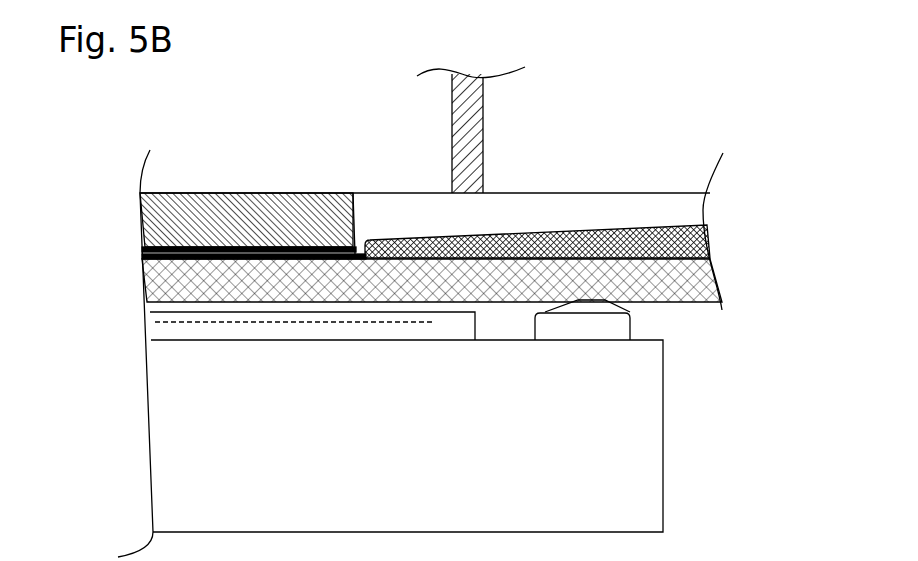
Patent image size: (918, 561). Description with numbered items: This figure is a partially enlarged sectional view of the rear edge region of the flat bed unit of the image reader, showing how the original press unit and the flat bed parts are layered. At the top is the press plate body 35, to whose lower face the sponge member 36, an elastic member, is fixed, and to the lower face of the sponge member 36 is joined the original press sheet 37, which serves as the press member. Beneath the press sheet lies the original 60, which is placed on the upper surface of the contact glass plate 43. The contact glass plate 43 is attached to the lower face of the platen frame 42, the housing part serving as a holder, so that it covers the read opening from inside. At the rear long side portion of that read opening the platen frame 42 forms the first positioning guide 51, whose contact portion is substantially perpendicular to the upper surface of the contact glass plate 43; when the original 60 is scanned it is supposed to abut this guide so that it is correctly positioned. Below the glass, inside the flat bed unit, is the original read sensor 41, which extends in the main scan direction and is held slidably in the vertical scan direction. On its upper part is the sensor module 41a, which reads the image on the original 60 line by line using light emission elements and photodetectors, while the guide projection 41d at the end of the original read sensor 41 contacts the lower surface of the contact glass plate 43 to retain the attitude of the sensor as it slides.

The press plate body 35 is at (483, 132).
The sponge member 36 is at (142, 215).
The original press sheet 37 is at (142, 250).
The original read sensor 41 is at (663, 490).
The sensor module 41a is at (242, 337).
The guide projection 41d is at (615, 322).
The platen frame 42 is at (624, 233).
The contact glass plate 43 is at (717, 278).
The first positioning guide 51 is at (358, 253).
The original 60 is at (142, 258).